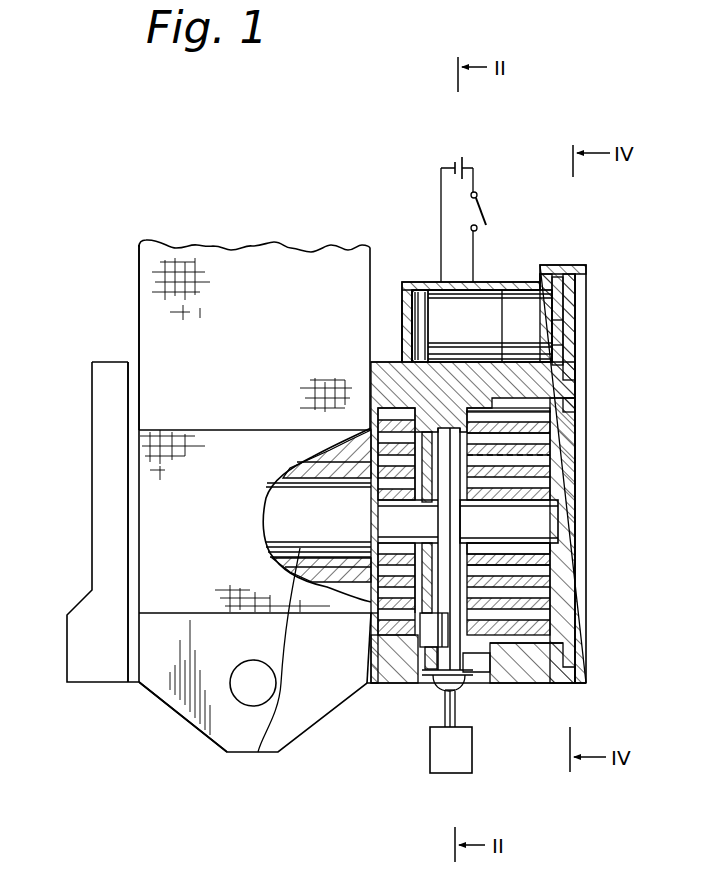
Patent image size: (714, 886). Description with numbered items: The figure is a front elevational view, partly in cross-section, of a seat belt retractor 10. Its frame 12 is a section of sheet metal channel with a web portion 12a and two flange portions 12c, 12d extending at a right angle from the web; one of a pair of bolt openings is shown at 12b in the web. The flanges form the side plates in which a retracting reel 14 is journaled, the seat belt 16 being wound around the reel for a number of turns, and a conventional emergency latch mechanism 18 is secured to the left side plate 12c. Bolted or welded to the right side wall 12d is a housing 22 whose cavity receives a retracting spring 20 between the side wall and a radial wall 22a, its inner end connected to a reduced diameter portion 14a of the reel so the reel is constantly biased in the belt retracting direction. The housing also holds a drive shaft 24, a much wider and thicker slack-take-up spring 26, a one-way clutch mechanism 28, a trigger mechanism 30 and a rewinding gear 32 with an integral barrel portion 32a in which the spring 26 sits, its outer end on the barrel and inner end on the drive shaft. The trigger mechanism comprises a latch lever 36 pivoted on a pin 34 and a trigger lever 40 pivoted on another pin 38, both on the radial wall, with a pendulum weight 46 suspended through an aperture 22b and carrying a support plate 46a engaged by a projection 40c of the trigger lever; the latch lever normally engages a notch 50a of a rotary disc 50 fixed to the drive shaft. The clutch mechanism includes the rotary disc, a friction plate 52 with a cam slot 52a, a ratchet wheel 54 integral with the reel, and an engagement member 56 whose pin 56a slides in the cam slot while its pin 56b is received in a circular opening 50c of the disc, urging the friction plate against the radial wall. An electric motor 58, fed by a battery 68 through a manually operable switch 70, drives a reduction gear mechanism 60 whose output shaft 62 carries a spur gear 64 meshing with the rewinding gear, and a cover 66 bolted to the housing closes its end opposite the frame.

The seat belt retractor 10 is at (195, 802).
The frame 12 is at (187, 733).
The web portion 12a is at (170, 697).
The opening 12b is at (248, 702).
The left side plate 12c is at (128, 497).
The right side wall 12d is at (372, 665).
The retracting reel 14 is at (260, 752).
The reduced diameter portion 14a is at (368, 518).
The seat belt 16 is at (140, 283).
The emergency latch mechanism 18 is at (70, 645).
The retracting spring 20 is at (430, 620).
The housing 22 is at (440, 660).
The radial wall 22a is at (372, 615).
The aperture 22b is at (455, 700).
The drive shaft 24 is at (547, 517).
The slack-take-up spring 26 is at (540, 412).
The clutch mechanism 28 is at (477, 302).
The trigger mechanism 30 is at (420, 690).
The rewinding gear 32 is at (563, 602).
The barrel portion 32a is at (540, 655).
The pin 34 is at (372, 645).
The latch lever 36 is at (473, 680).
The pin 38 is at (430, 695).
The trigger lever 40 is at (467, 668).
The projection 40c is at (453, 713).
The pendulum weight 46 is at (455, 765).
The support plate 46a is at (458, 698).
The rotary disc 50 is at (500, 468).
The notch 50a is at (500, 523).
The circular opening 50c is at (467, 436).
The friction plate 52 is at (377, 362).
The cam slot 52a is at (372, 372).
The ratchet wheel 54 is at (500, 552).
The engagement member 56 is at (580, 410).
The pin 56a is at (396, 362).
The pin 56b is at (530, 452).
The electric motor 58 is at (447, 430).
The reduction gear mechanism 60 is at (530, 310).
The output shaft 62 is at (558, 306).
The spur gear 64 is at (570, 333).
The cover 66 is at (582, 645).
The battery 68 is at (462, 157).
The switch 70 is at (487, 208).